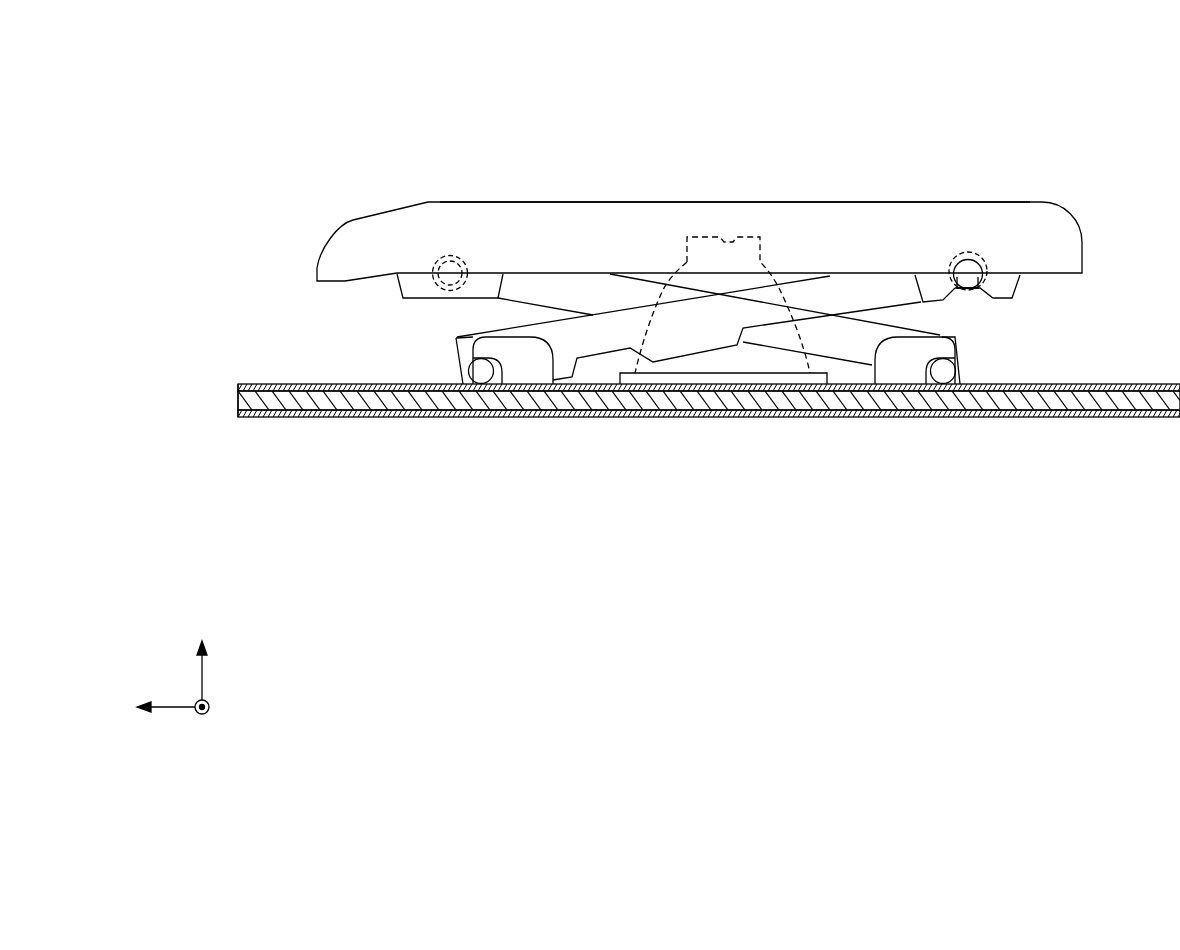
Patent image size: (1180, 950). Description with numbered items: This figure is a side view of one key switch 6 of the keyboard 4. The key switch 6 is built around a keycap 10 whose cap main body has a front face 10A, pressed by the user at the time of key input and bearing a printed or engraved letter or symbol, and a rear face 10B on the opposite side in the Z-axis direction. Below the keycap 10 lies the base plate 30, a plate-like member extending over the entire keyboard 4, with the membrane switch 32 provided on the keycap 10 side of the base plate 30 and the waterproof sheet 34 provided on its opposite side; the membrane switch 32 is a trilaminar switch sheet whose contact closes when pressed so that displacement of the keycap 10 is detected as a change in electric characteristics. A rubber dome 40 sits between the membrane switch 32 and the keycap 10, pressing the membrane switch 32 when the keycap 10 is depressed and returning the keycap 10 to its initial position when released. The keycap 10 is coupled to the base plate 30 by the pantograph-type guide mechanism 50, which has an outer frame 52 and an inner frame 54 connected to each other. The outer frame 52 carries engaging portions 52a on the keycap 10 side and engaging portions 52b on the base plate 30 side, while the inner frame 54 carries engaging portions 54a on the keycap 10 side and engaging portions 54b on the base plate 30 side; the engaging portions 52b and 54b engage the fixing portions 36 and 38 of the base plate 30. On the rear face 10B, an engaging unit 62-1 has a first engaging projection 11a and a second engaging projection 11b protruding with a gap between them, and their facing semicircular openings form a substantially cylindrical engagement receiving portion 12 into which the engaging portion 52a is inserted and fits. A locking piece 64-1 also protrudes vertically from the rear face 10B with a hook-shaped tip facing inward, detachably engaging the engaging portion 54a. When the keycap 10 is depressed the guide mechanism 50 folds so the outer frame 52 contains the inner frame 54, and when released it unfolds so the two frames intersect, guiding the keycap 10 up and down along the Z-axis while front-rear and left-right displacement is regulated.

The keyboard 4 is at (1065, 42).
The key switch 6 is at (377, 197).
The keycap 10 is at (1057, 242).
The front face 10A is at (668, 203).
The rear face 10B is at (737, 237).
The locking piece 64-1 is at (485, 272).
The guide mechanism 50 is at (904, 128).
The outer frame 52 is at (827, 295).
The inner frame 54 is at (847, 345).
The engaging portion 52a is at (980, 295).
The engaging portion 52b is at (480, 377).
The engaging portion 54a is at (447, 290).
The engaging portion 54b is at (942, 377).
The engaging unit 62-1 is at (937, 128).
The second engaging projection 11b is at (933, 279).
The first engaging projection 11a is at (1003, 279).
The engagement receiving portion 12 is at (965, 289).
The fixing portion 36 is at (530, 375).
The fixing portion 38 is at (893, 376).
The rubber dome 40 is at (725, 375).
The base plate 30 is at (1062, 402).
The membrane switch 32 is at (1134, 383).
The waterproof sheet 34 is at (1123, 418).